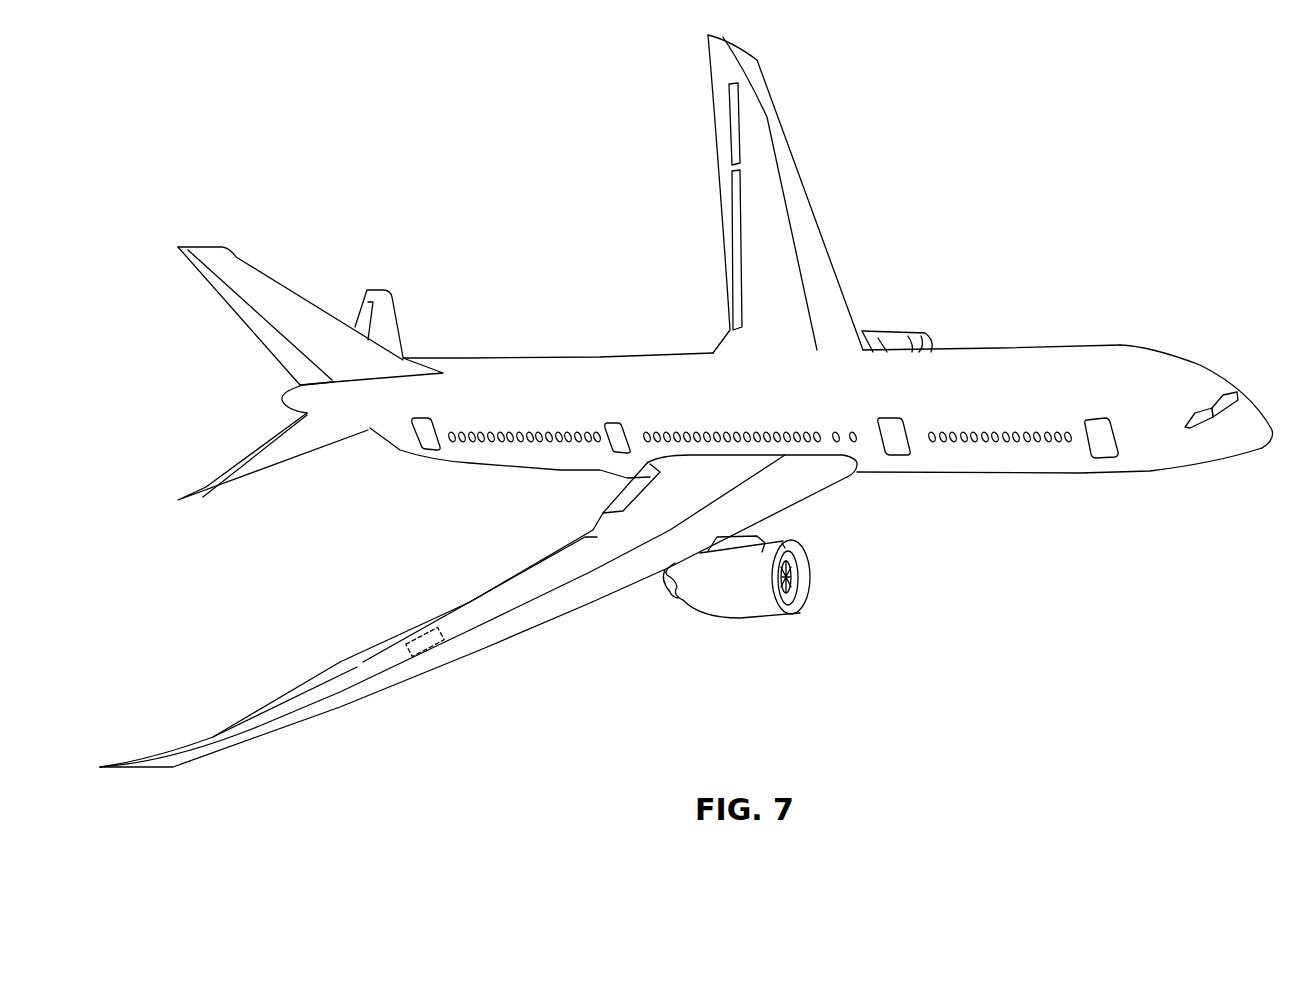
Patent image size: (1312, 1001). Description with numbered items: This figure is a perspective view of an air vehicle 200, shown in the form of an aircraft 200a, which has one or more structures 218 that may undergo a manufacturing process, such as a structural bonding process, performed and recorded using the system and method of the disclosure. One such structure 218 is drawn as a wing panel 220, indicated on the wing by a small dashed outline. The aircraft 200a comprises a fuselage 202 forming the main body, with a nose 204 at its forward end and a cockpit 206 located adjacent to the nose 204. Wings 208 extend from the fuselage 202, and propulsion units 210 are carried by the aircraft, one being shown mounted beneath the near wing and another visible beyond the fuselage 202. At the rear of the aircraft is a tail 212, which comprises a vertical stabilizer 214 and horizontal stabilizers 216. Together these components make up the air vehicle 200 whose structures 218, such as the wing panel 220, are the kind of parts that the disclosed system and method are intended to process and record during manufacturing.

The air vehicle 200 is at (693, 401).
The aircraft 200a is at (893, 218).
The fuselage 202 is at (795, 391).
The nose 204 is at (1250, 440).
The cockpit 206 is at (1232, 400).
The wings 208 is at (770, 117).
The propulsion units 210 is at (900, 332).
The tail 212 is at (280, 362).
The vertical stabilizer 214 is at (252, 280).
The horizontal stabilizers 216 is at (392, 322).
The structures 218 is at (431, 619).
The wing panel 220 is at (428, 633).